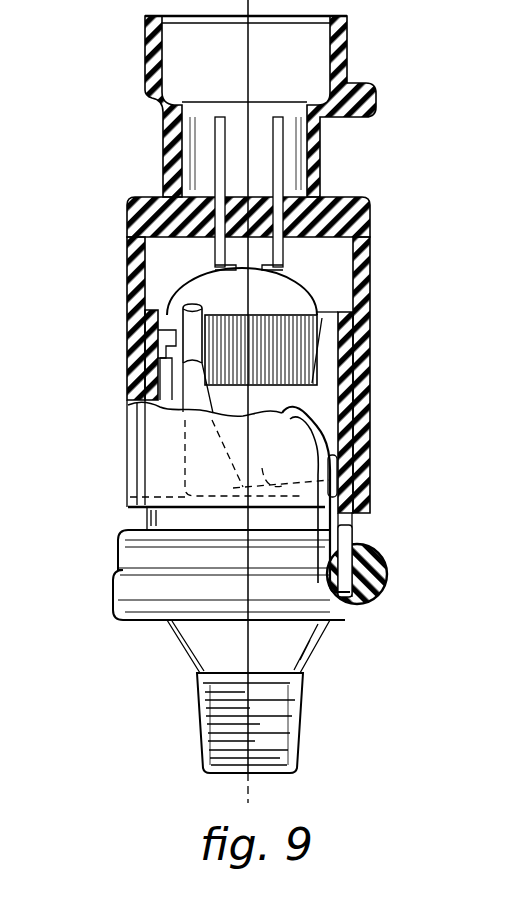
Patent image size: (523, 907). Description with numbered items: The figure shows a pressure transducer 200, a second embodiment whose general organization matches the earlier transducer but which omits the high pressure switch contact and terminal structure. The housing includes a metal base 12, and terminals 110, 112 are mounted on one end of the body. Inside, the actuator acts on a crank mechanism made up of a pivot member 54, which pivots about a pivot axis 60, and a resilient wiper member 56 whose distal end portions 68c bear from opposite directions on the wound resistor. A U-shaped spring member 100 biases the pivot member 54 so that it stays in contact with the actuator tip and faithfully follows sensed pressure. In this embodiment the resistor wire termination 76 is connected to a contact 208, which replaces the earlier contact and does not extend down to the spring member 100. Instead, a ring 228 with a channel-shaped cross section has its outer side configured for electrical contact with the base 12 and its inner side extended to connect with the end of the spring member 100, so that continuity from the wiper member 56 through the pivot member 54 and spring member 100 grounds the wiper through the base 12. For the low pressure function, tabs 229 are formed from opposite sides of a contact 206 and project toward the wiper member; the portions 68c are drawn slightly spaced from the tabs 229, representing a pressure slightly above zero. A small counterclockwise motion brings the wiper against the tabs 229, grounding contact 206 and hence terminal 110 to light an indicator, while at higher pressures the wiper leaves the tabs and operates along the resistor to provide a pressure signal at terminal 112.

The pressure transducer 200 is at (375, 202).
The terminal 110 is at (222, 159).
The terminal 112 is at (277, 181).
The contact 206 is at (178, 298).
The contact 208 is at (316, 291).
The termination 76 is at (320, 332).
The distal end portions 68c is at (155, 328).
The tabs 229 is at (158, 354).
The wiper member 56 is at (197, 397).
The pivot member 54 is at (185, 497).
The spring member 100 is at (320, 432).
The pivot axis 60 is at (338, 477).
The ring 228 is at (378, 572).
The metal base 12 is at (320, 656).